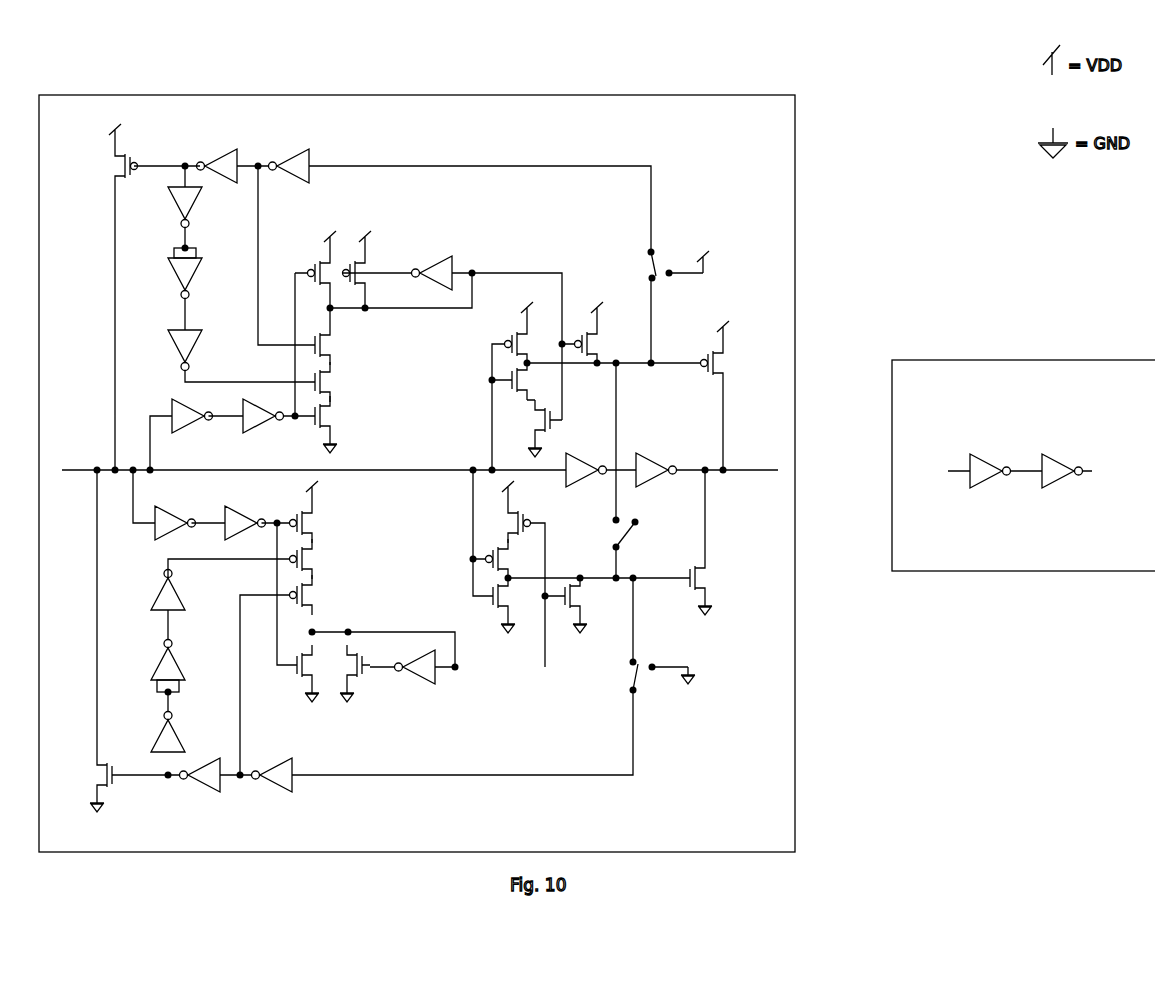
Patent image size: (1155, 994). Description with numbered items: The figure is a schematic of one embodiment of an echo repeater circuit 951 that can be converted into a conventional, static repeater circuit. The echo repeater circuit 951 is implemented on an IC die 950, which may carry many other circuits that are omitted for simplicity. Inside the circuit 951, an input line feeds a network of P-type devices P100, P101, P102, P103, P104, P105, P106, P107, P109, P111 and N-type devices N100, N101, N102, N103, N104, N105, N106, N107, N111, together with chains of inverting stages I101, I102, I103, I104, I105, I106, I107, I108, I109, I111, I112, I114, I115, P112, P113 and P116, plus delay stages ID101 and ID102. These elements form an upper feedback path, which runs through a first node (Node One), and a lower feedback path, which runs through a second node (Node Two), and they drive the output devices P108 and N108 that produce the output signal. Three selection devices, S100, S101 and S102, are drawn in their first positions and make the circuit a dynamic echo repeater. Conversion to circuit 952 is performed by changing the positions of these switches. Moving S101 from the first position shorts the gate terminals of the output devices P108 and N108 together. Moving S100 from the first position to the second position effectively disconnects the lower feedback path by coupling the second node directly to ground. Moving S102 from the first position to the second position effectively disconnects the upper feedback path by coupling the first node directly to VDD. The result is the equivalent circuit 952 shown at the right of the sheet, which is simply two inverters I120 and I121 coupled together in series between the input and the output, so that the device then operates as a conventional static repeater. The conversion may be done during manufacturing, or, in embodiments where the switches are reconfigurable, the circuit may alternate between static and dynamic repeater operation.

The IC die 950 is at (562, 95).
The echo repeater circuit 951 is at (420, 453).
The converted circuit 952 is at (1023, 523).
The PMOS transistor P100 is at (103, 155).
The PMOS transistor P101 is at (326, 512).
The PMOS transistor P102 is at (326, 559).
The PMOS transistor P103 is at (326, 595).
The PMOS transistor P104 is at (513, 559).
The PMOS transistor P105 is at (501, 512).
The PMOS transistor P106 is at (502, 333).
The PMOS transistor P107 is at (603, 333).
The output device P108 is at (732, 352).
The PMOS transistor P109 is at (378, 262).
The PMOS transistor P111 is at (305, 262).
The inverter P112 is at (211, 160).
The inverter P113 is at (280, 160).
The inverter P116 is at (656, 479).
The NMOS transistor N100 is at (315, 606).
The NMOS transistor N101 is at (342, 345).
The NMOS transistor N102 is at (342, 382).
The NMOS transistor N103 is at (342, 424).
The NMOS transistor N104 is at (287, 673).
The NMOS transistor N105 is at (366, 669).
The NMOS transistor N106 is at (483, 604).
The NMOS transistor N107 is at (586, 604).
The output device N108 is at (715, 586).
The NMOS transistor N111 is at (530, 380).
The inverter I101 is at (167, 207).
The inverter I102 is at (168, 350).
The inverter I103 is at (192, 423).
The inverter I104 is at (262, 423).
The inverter I105 is at (173, 515).
The inverter I106 is at (244, 515).
The inverter I107 is at (149, 590).
The inverter I108 is at (149, 732).
The inverter I109 is at (193, 783).
The inverter I111 is at (266, 783).
The inverter I112 is at (410, 675).
The inverter I114 is at (451, 267).
The inverter I115 is at (585, 479).
The inverter I120 is at (983, 489).
The inverter I121 is at (1059, 489).
The delay inverter ID101 is at (160, 272).
The delay inverter ID102 is at (144, 668).
The selection device S100 is at (638, 676).
The selection device S101 is at (603, 534).
The selection device S102 is at (653, 265).